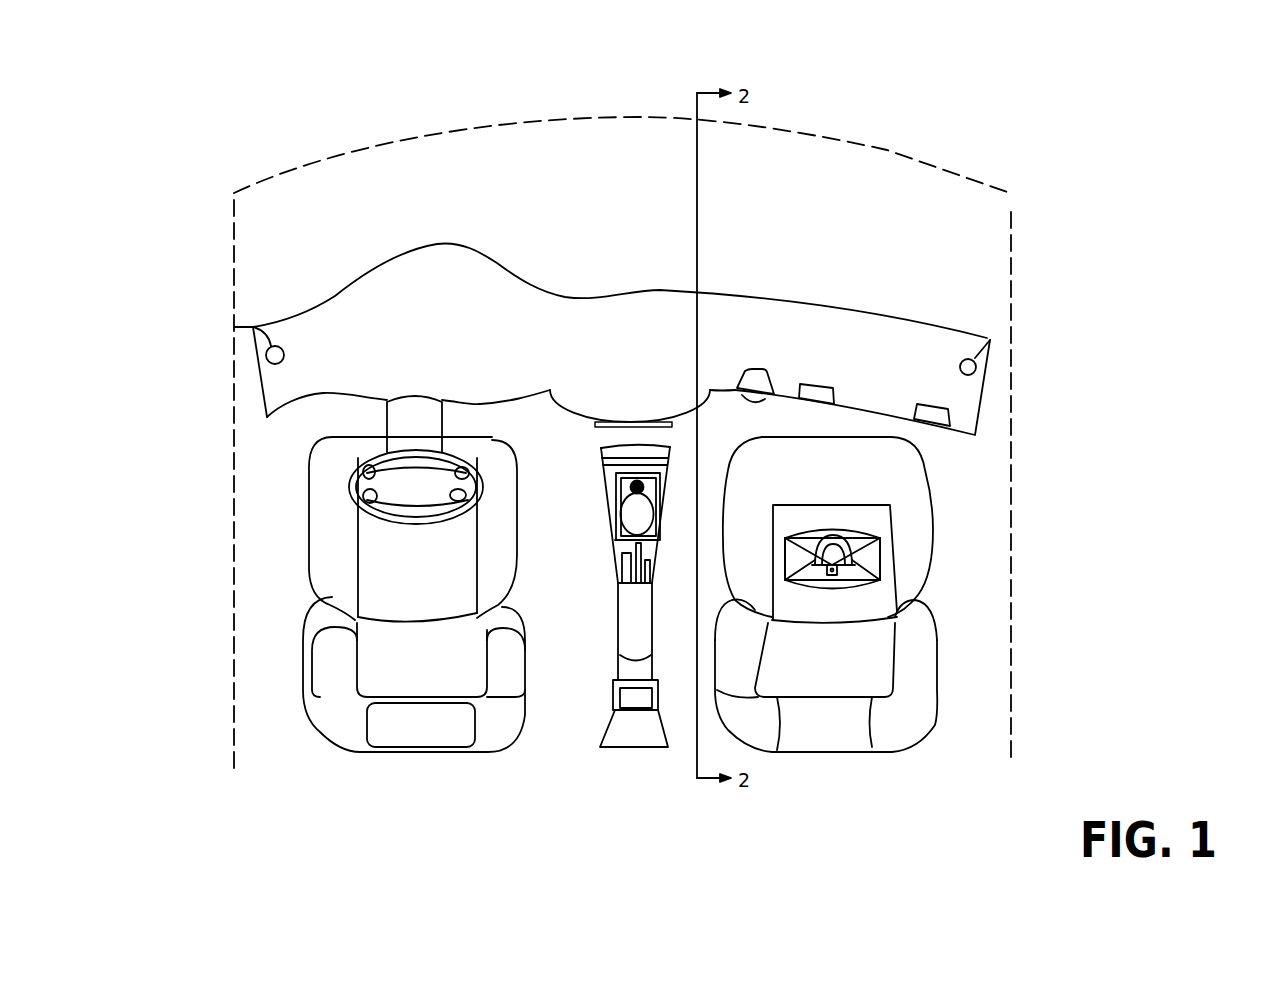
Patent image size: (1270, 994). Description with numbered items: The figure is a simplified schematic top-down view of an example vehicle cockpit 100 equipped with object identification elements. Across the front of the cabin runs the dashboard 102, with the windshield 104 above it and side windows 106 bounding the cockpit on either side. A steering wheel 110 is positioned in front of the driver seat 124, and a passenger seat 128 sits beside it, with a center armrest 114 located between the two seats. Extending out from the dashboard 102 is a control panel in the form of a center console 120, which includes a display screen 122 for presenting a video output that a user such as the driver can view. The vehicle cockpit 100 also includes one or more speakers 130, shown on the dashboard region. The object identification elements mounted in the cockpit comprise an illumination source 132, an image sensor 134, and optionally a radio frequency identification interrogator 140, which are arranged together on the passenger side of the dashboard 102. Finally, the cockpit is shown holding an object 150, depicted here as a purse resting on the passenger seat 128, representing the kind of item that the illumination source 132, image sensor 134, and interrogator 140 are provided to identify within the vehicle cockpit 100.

The vehicle cockpit 100 is at (1191, 84).
The dashboard 102 is at (363, 317).
The windshield 104 is at (887, 150).
The side windows 106 is at (233, 567).
The steering wheel 110 is at (355, 460).
The center armrest 114 is at (617, 723).
The center console 120 is at (618, 418).
The display screen 122 is at (598, 426).
The driver seat 124 is at (390, 638).
The passenger seat 128 is at (905, 640).
The speakers 130 is at (253, 327).
The illumination source 132 is at (817, 387).
The image sensor 134 is at (752, 370).
The radio frequency identification (RFID) interrogator 140 is at (940, 407).
The object 150 is at (880, 573).